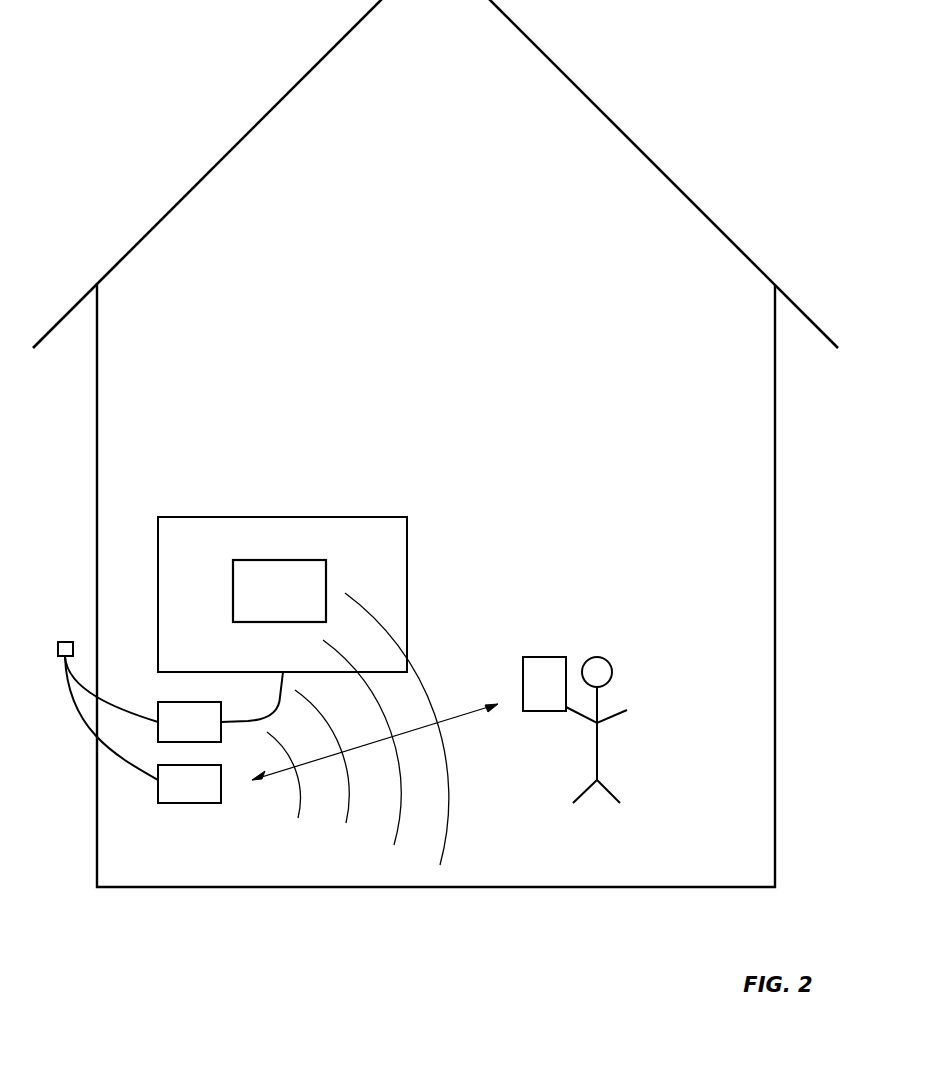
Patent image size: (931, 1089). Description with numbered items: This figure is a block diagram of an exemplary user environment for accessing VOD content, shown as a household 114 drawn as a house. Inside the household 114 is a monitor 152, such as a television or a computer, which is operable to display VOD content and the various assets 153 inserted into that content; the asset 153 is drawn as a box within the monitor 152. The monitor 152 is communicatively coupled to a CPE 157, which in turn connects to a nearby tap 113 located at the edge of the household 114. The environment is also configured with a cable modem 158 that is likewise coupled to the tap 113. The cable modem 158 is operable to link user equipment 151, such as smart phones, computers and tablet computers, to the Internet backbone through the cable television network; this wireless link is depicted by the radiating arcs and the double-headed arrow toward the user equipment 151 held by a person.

The household 114 is at (240, 142).
The monitor 152 is at (220, 517).
The asset 153 is at (279, 591).
The CPE 157 is at (220, 707).
The cable modem 158 is at (189, 784).
The tap 113 is at (63, 642).
The user equipment 151 is at (523, 660).